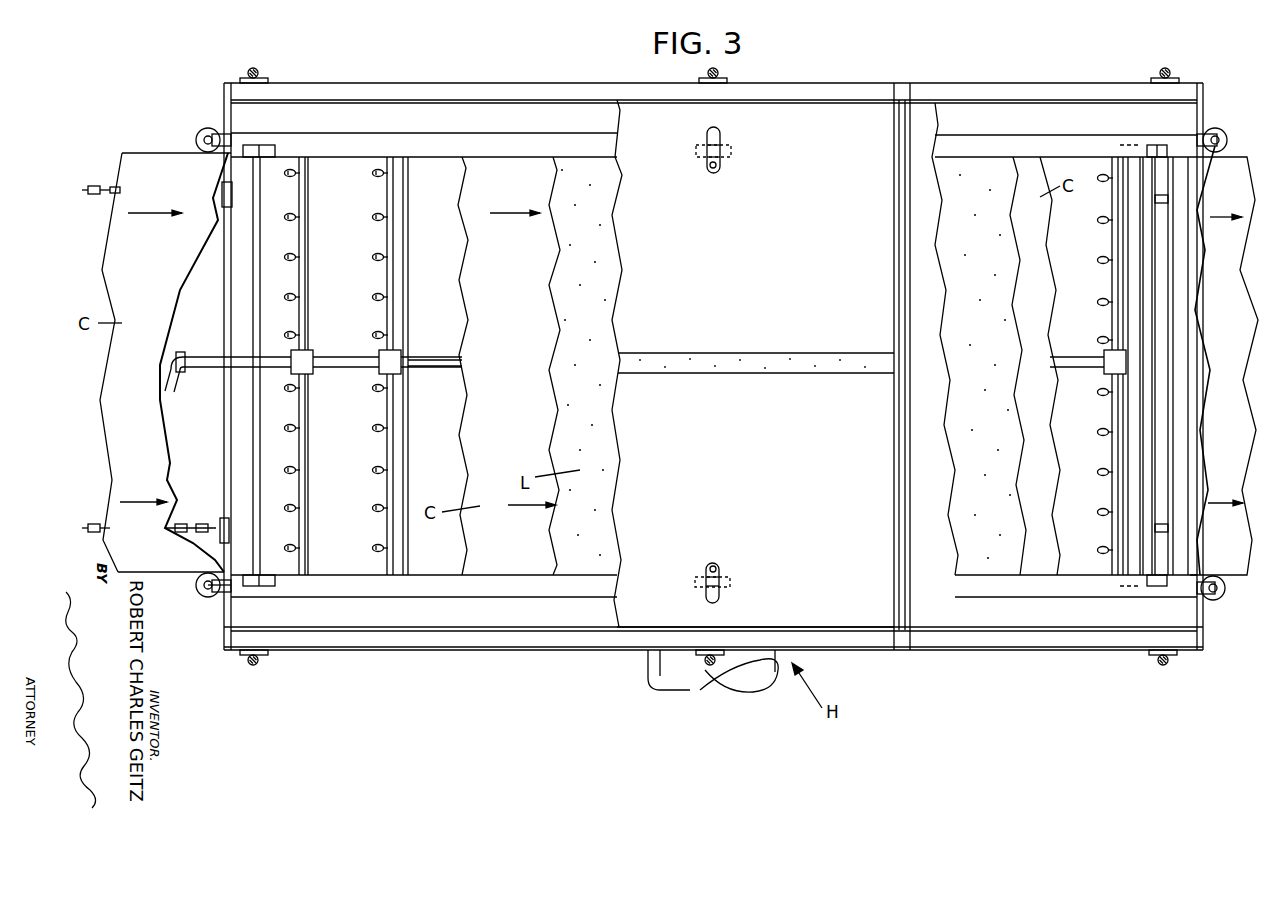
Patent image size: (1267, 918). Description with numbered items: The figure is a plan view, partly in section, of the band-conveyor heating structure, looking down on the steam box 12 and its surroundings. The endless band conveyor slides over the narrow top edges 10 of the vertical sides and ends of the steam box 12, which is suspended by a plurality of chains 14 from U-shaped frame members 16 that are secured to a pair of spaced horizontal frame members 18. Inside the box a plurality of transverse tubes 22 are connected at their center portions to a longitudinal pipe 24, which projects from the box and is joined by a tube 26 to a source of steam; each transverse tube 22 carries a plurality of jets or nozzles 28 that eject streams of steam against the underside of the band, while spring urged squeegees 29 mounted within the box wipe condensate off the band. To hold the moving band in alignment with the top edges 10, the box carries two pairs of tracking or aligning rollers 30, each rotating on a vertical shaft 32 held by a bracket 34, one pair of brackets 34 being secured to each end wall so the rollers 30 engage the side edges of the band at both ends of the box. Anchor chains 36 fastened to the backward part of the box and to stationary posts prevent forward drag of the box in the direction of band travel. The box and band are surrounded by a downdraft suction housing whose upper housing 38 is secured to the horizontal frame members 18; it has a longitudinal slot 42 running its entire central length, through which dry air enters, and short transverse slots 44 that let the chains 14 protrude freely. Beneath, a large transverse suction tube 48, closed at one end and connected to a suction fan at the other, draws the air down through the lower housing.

The top edges 10 is at (413, 157).
The steam box 12 is at (348, 562).
The chains 14 is at (716, 150).
The U-shaped frame members 16 is at (259, 70).
The horizontal frame members 18 is at (388, 86).
The transverse tubes 22 is at (302, 238).
The longitudinal pipe 24 is at (367, 360).
The tube 26 is at (180, 398).
The jets or nozzles 28 is at (380, 178).
The spring urged squeegees 29 is at (1147, 327).
The tracking or aligning rollers 30 is at (196, 140).
The vertical shaft 32 is at (208, 588).
The bracket 34 is at (212, 136).
The anchor chains 36 is at (93, 185).
The upper housing 38 is at (813, 117).
The longitudinal slot 42 is at (758, 356).
The short transverse slots 44 is at (718, 167).
The transverse suction tube 48 is at (742, 683).